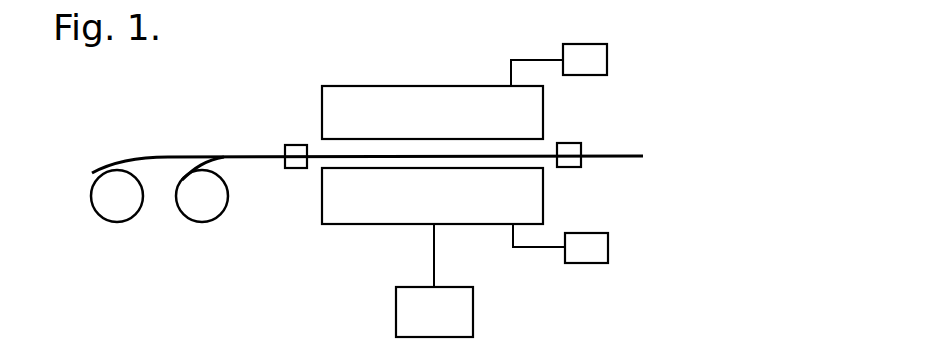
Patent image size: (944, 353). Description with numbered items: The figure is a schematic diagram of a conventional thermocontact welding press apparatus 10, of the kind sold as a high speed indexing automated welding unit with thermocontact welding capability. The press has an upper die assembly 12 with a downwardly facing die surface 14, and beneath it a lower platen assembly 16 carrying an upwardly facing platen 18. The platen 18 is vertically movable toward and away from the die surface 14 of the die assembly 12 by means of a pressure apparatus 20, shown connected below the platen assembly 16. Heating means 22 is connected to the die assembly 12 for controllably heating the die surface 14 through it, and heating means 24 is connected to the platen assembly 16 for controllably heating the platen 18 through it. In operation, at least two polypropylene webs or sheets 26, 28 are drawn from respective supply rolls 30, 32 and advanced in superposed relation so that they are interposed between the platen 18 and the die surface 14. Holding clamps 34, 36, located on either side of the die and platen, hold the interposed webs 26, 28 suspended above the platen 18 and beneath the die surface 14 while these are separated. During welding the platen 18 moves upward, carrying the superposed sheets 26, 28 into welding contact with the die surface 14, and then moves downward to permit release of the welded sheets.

The thermocontact welding press apparatus 10 is at (313, 58).
The upper die assembly 12 is at (406, 124).
The die surface 14 is at (540, 136).
The lower platen assembly 16 is at (405, 208).
The platen 18 is at (323, 166).
The pressure apparatus 20 is at (421, 323).
The heating means 22 is at (573, 70).
The heating means 24 is at (574, 259).
The polypropylene web or sheet 26 is at (225, 185).
The polypropylene web or sheet 28 is at (172, 155).
The supply roll 30 is at (188, 210).
The supply roll 32 is at (100, 210).
The holding clamp 34 is at (296, 147).
The holding clamp 36 is at (572, 167).